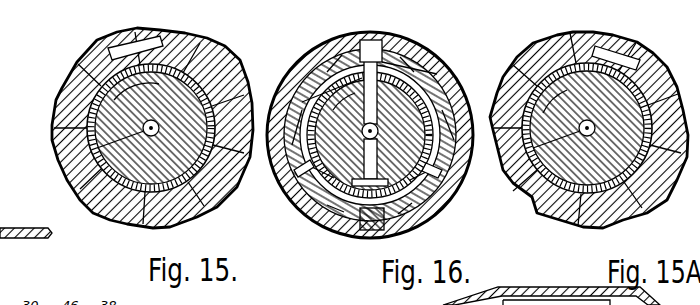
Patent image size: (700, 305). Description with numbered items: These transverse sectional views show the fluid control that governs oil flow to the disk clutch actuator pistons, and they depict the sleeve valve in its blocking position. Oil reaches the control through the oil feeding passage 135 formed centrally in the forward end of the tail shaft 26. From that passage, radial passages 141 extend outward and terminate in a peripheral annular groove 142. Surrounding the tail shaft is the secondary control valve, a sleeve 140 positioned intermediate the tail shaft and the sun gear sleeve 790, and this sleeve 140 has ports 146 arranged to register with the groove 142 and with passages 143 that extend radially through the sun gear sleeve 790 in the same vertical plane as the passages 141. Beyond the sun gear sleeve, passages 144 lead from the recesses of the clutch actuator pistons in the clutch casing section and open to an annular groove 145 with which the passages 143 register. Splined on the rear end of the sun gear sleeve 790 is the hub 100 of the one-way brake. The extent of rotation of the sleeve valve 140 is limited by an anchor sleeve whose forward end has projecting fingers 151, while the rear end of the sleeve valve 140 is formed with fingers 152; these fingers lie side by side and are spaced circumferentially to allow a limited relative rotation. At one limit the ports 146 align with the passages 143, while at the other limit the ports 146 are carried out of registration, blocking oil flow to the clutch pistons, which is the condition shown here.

In FIG. 15, the shaft 26 is at (241, 91).
In FIG. 16, the shaft 26 is at (425, 207).
In FIG. 15A, the shaft 26 is at (657, 62).
In FIG. 15, the hub 100 is at (63, 93).
In FIG. 15A, the hub 100 is at (555, 82).
In FIG. 15, the oil feeding passage 135 is at (72, 148).
In FIG. 16, the oil feeding passage 135 is at (312, 200).
In FIG. 15A, the oil feeding passage 135 is at (506, 165).
In FIG. 15, the sleeve 140 is at (68, 181).
In FIG. 16, the sleeve 140 is at (402, 217).
In FIG. 15A, the sleeve 140 is at (508, 186).
In FIG. 16, the passages 141 is at (432, 57).
In FIG. 16, the peripheral annular groove 142 is at (332, 214).
In FIG. 16, the passages 143 is at (397, 62).
In FIG. 16, the passages 144 is at (360, 34).
In FIG. 16, the annular groove 145 is at (282, 165).
In FIG. 16, the ports 146 is at (290, 87).
In FIG. 15, the fingers 151 is at (52, 119).
In FIG. 15A, the fingers 151 is at (527, 53).
In FIG. 15, the fingers 152 is at (75, 78).
In FIG. 15A, the fingers 152 is at (528, 70).
In FIG. 15, the sleeve 790 is at (118, 68).
In FIG. 16, the sleeve 790 is at (446, 76).
In FIG. 15A, the sleeve 790 is at (630, 52).